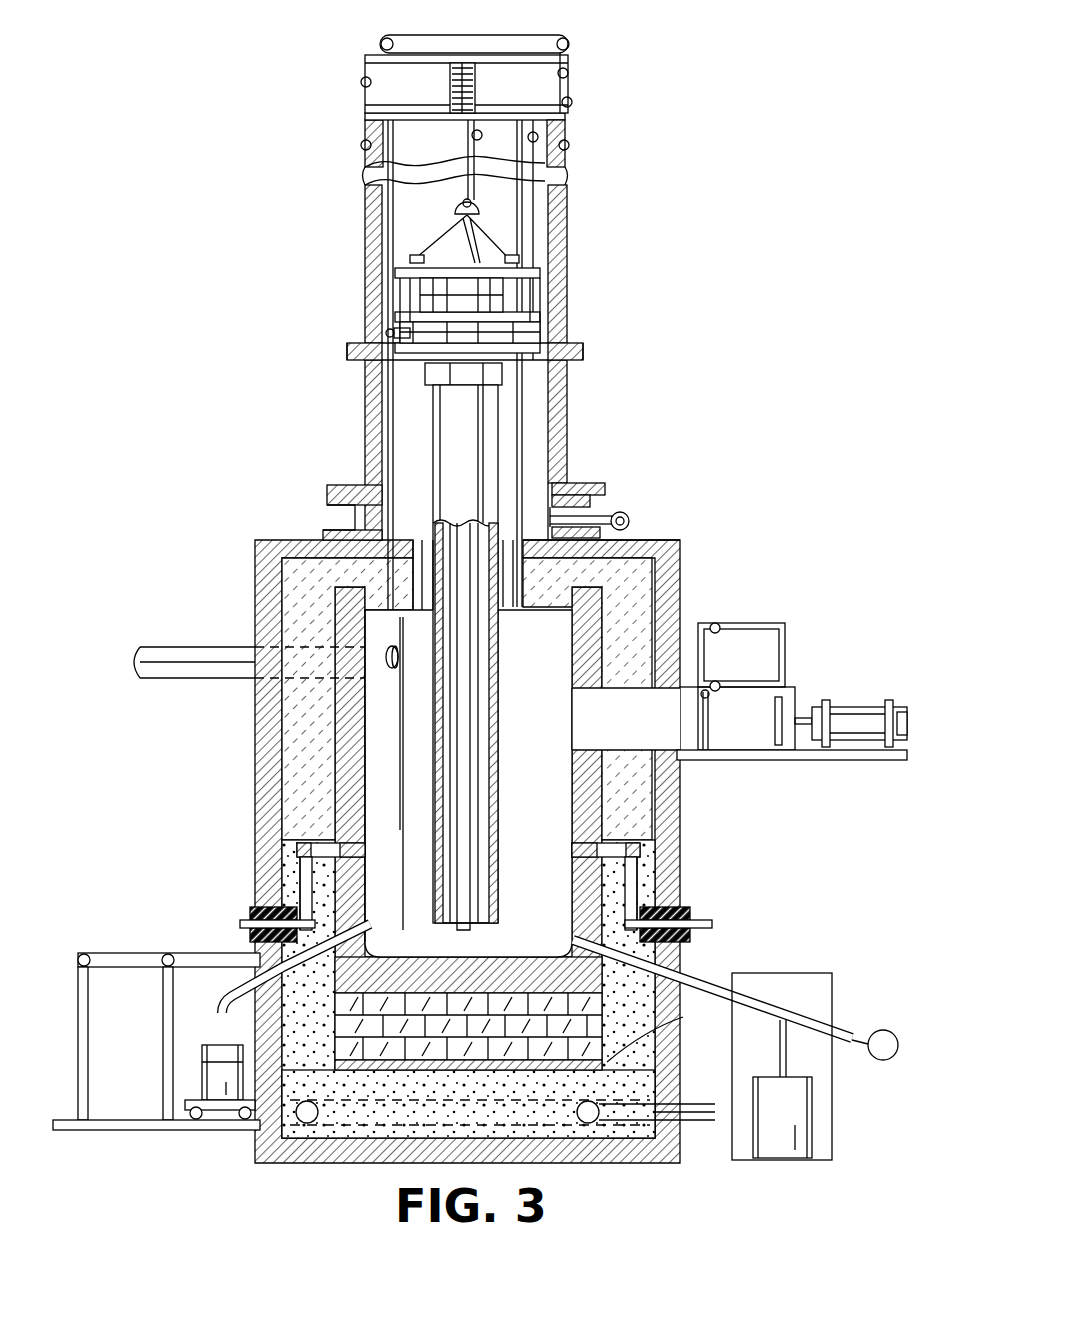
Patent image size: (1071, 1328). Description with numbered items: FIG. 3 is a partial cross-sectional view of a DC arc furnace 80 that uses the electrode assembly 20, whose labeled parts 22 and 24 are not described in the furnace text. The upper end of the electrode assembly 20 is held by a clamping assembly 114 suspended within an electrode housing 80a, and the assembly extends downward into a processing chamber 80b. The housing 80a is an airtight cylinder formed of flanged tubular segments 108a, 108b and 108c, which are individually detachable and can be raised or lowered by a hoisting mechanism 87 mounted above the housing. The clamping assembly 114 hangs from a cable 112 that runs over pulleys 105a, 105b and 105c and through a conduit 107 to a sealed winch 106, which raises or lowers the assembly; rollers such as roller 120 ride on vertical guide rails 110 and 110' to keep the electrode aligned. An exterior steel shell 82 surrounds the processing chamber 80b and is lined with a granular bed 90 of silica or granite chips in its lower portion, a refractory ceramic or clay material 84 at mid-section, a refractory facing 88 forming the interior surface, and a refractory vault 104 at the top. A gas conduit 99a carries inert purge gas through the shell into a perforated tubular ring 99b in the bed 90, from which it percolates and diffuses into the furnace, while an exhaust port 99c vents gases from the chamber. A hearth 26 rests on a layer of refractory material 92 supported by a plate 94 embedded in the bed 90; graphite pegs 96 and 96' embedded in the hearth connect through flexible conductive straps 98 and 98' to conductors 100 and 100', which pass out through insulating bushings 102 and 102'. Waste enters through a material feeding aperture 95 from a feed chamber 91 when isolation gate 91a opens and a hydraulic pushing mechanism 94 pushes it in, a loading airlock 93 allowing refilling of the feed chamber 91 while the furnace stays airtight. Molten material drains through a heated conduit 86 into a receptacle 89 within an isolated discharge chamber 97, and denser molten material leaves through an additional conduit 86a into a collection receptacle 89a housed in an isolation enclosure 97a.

The electrode assembly 20 is at (508, 694).
The chamber wall 22 is at (497, 748).
The central tube 24 is at (480, 925).
The hearth 26 is at (488, 984).
The furnace 80 is at (684, 373).
The housing 80a is at (607, 348).
The processing chamber 80b is at (700, 555).
The exterior shell 82 is at (680, 612).
The refractory ceramic or clay material 84 is at (318, 756).
The conduit 86 is at (256, 975).
The additional conduit 86a is at (722, 993).
The hoisting mechanism 87 is at (585, 50).
The refractory facing 88 is at (358, 748).
The receptacle 89 is at (235, 1079).
The collection receptacle 89a is at (804, 1117).
The granular bed 90 is at (490, 1097).
The feed chamber 91 is at (740, 728).
The isolation gate 91a is at (700, 750).
The layer of refractory material 92 is at (495, 1034).
The loading airlock 93 is at (790, 640).
The hydraulic pushing mechanism 94 is at (856, 706).
The material feeding aperture 95 is at (570, 719).
The graphite peg 96 is at (352, 884).
The graphite peg 96' is at (578, 884).
The isolated discharge chamber 97 is at (160, 936).
The isolation enclosure 97a is at (790, 973).
The conductive strap 98 is at (253, 888).
The conductive strap 98' is at (683, 888).
The gas conduit 99a is at (656, 1128).
The perforated tubular ring 99b is at (637, 1100).
The exhaust port 99c is at (210, 650).
The conductor 100 is at (244, 909).
The conductor 100' is at (703, 937).
The insulating bushing 102 is at (247, 908).
The insulating bushing 102' is at (703, 911).
The refractory vault 104 is at (648, 598).
The pulley 105a is at (475, 126).
The pulley 105b is at (560, 150).
The pulley 105c is at (552, 487).
The winch 106 is at (630, 522).
The conduit 107 is at (612, 519).
The flanged tubular segment 108a is at (567, 300).
The flanged tubular segment 108b is at (567, 412).
The flanged tubular segment 108c is at (603, 490).
The guide rail 110 is at (373, 363).
The guide rail 110' is at (573, 362).
The cable 112 is at (383, 176).
The clamping assembly 114 is at (425, 250).
The roller 120 is at (390, 333).